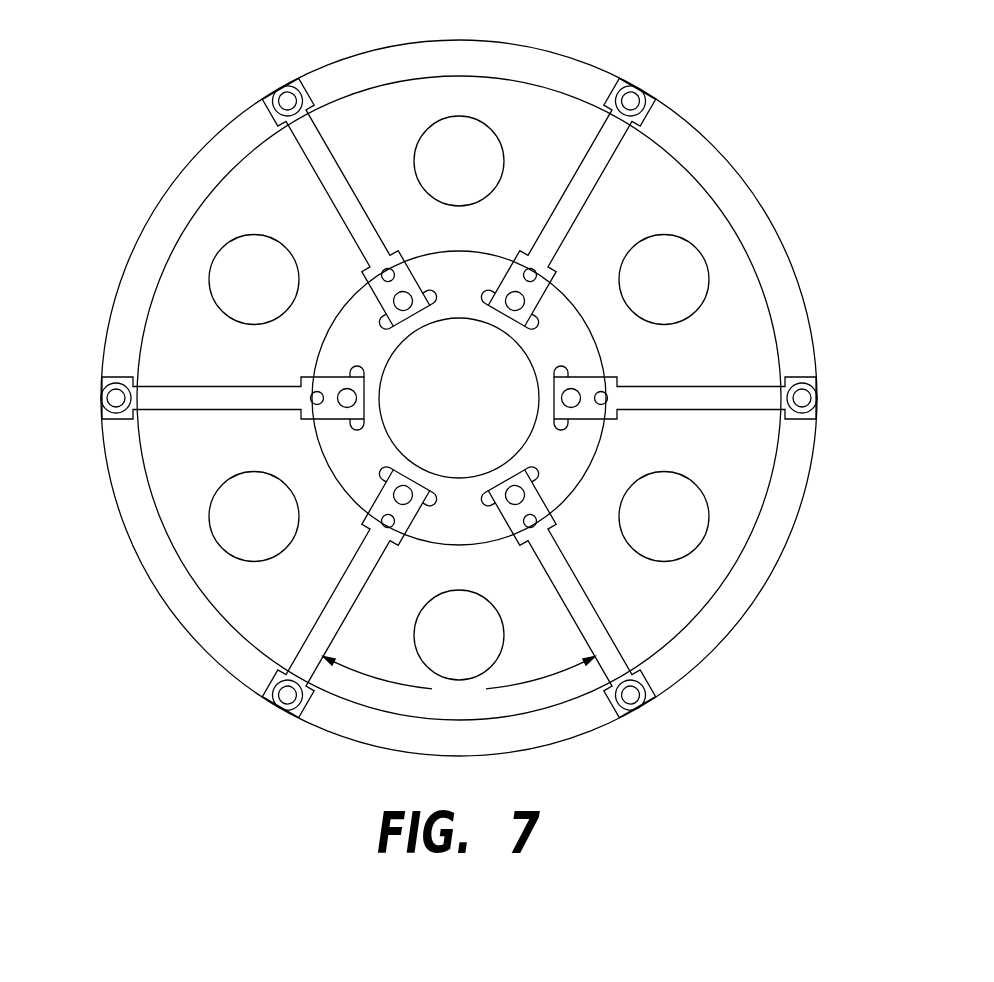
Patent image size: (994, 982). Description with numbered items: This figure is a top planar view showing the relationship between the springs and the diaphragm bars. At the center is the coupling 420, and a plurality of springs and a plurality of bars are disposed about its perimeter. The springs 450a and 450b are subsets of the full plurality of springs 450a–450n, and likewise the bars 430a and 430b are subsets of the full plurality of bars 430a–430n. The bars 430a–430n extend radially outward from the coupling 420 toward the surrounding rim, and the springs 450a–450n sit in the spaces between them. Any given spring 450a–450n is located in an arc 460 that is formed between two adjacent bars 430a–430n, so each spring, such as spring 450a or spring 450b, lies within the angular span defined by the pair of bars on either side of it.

The coupling 420 is at (532, 338).
The bar 430a is at (178, 395).
The bar 430b is at (752, 395).
The bar 430n is at (315, 158).
The spring 450a is at (242, 523).
The spring 450b is at (665, 520).
The spring 450n is at (457, 158).
The arc 460 is at (459, 681).